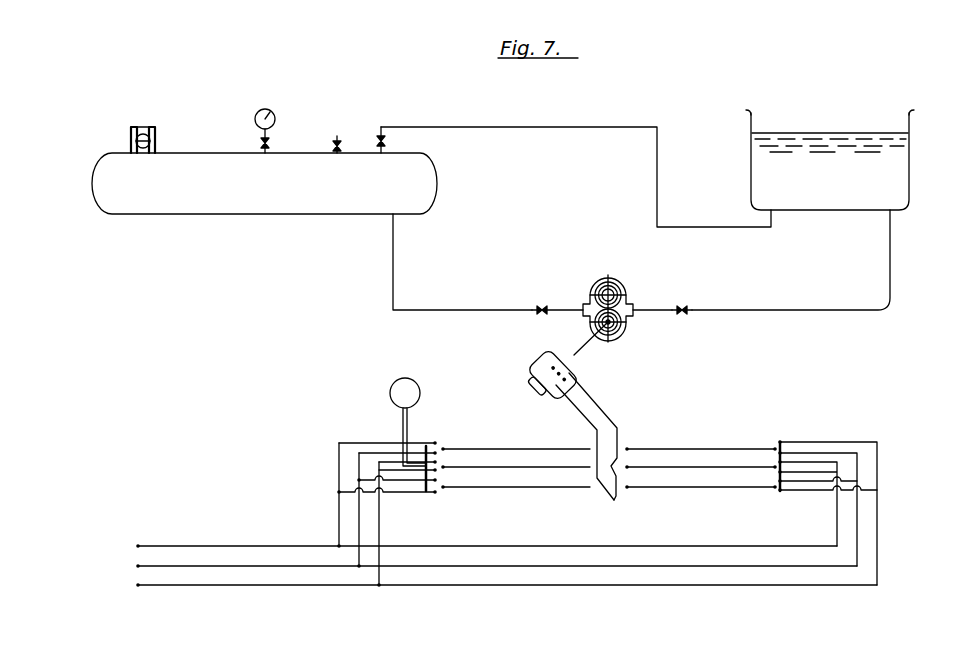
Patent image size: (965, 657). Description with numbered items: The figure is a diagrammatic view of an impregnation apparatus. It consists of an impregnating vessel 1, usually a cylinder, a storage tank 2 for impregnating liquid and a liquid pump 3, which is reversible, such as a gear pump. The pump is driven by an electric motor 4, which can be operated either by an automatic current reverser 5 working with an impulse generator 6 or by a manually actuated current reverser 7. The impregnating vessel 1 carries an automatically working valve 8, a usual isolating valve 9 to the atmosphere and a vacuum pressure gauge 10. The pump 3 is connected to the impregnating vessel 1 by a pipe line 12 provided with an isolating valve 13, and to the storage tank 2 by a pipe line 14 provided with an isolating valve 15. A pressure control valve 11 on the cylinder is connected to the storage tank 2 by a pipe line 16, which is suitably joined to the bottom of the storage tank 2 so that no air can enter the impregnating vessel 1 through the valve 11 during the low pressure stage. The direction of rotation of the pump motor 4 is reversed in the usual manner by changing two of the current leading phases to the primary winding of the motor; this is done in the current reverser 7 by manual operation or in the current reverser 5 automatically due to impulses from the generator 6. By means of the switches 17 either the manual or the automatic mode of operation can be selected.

The impregnating vessel 1 is at (264, 183).
The storage tank 2 is at (806, 131).
The liquid pump 3 is at (623, 315).
The electric motor 4 is at (536, 372).
The automatic current reverser 5 is at (428, 492).
The impulse generator 6 is at (408, 422).
The manually actuated current reverser 7 is at (791, 440).
The automatically working valve 8 is at (137, 127).
The isolating valve 9 is at (338, 135).
The vacuum pressure gauge 10 is at (286, 108).
The pressure control valve 11 is at (399, 127).
The pipe line 12 is at (418, 310).
The isolating valve 13 is at (543, 306).
The pipe line 14 is at (794, 310).
The isolating valve 15 is at (683, 306).
The pipe line 16 is at (603, 127).
The switches 17 is at (620, 441).